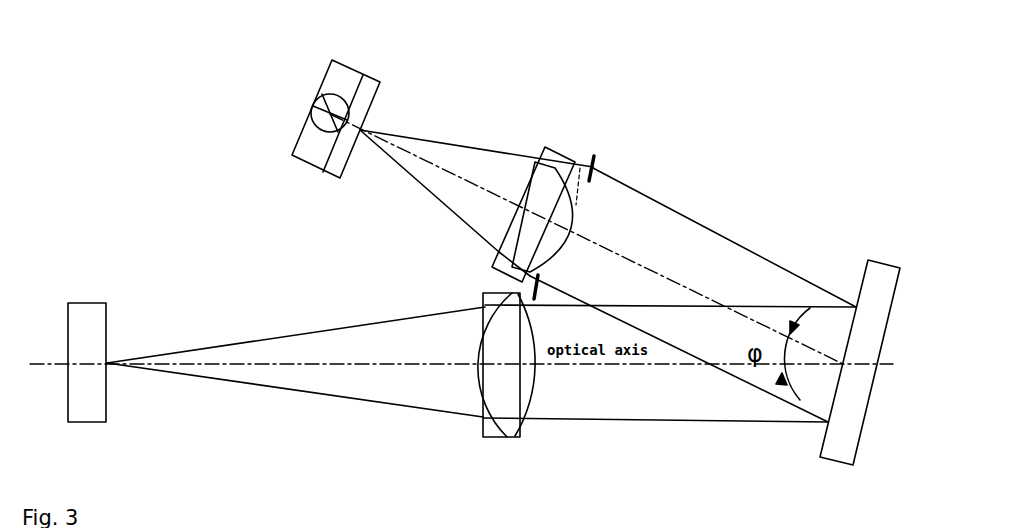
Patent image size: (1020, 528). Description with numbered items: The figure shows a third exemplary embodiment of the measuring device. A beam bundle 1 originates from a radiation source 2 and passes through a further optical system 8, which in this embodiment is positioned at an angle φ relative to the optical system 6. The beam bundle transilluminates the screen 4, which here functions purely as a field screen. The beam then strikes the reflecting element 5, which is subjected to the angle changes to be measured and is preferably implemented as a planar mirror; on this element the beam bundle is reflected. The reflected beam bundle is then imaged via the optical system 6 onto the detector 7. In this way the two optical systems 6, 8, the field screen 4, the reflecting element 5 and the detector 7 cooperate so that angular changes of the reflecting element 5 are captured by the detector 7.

The beam bundle 1 is at (485, 167).
The radiation source 2 is at (335, 85).
The screen 4 is at (593, 170).
The reflecting element 5 is at (883, 282).
The optical system 6 is at (493, 428).
The detector 7 is at (88, 330).
The further optical system 8 is at (560, 172).